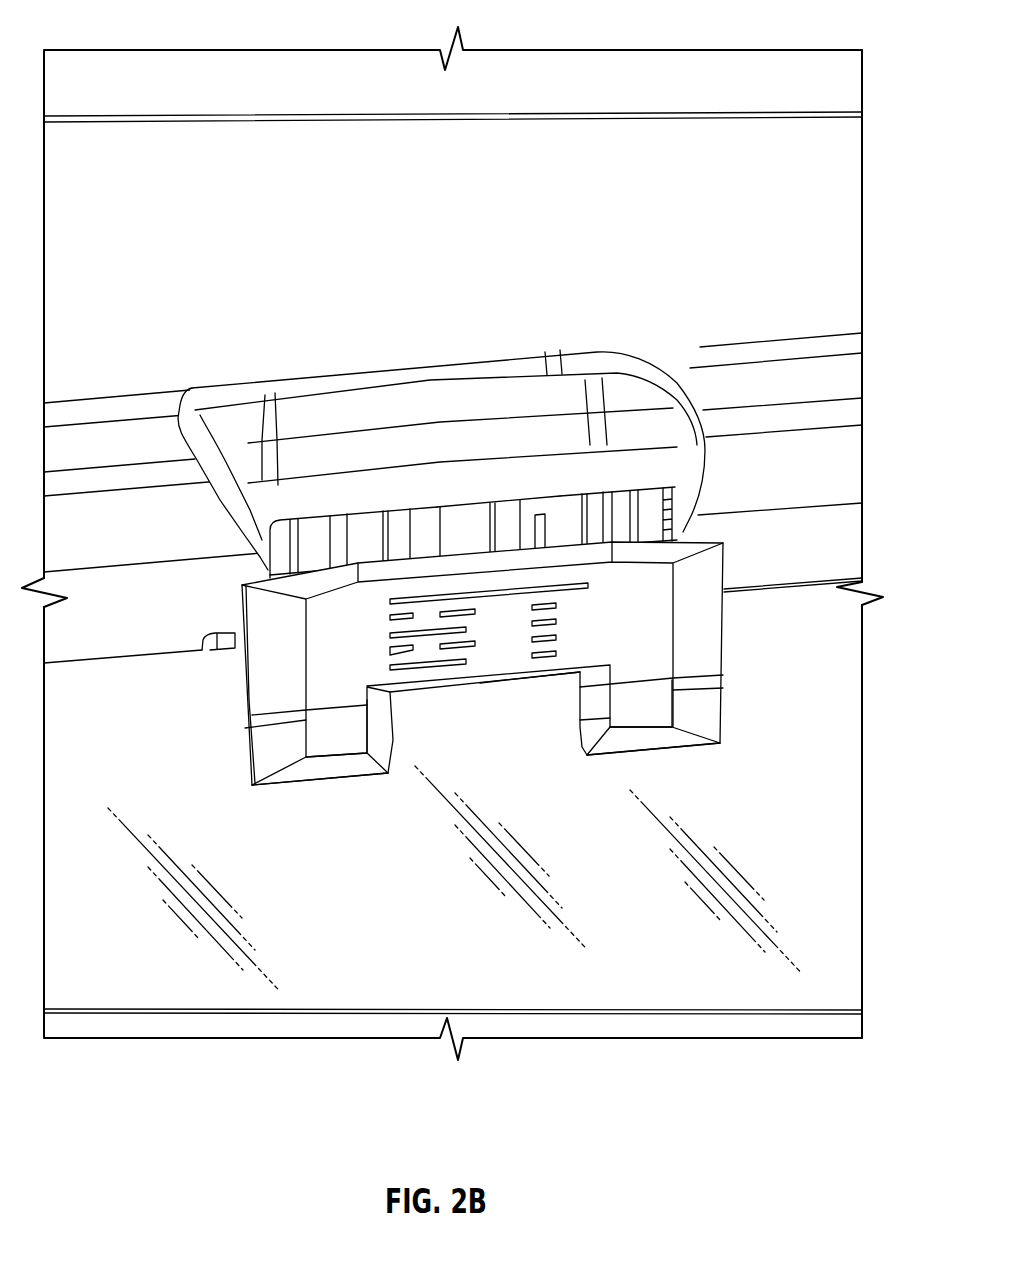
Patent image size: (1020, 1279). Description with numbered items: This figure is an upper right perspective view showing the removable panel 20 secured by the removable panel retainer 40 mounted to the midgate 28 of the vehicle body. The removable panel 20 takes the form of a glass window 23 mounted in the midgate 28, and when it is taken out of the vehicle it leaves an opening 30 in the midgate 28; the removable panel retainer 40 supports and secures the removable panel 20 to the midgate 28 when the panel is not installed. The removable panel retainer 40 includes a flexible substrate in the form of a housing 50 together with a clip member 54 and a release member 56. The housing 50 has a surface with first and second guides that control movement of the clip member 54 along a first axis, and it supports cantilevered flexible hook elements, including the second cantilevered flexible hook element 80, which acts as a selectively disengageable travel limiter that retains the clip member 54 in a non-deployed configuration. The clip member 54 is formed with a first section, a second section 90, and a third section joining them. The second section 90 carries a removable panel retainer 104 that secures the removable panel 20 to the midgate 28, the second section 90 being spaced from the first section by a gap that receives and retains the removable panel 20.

The removable panel 20 is at (617, 983).
The glass window 23 is at (815, 723).
The midgate 28 is at (815, 204).
The opening 30 is at (795, 110).
The removable panel retainer 40 is at (705, 482).
The housing 50 is at (307, 548).
The clip member 54 is at (645, 710).
The release member 56 is at (443, 547).
The second cantilevered flexible hook element 80 is at (558, 525).
The second section 90 is at (687, 622).
The removable panel retainer 104 is at (337, 745).